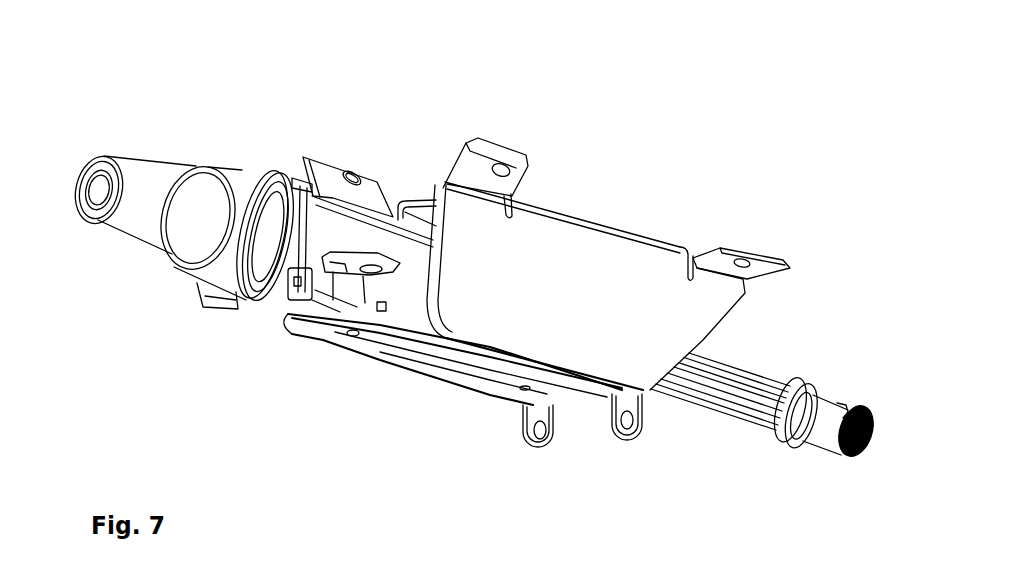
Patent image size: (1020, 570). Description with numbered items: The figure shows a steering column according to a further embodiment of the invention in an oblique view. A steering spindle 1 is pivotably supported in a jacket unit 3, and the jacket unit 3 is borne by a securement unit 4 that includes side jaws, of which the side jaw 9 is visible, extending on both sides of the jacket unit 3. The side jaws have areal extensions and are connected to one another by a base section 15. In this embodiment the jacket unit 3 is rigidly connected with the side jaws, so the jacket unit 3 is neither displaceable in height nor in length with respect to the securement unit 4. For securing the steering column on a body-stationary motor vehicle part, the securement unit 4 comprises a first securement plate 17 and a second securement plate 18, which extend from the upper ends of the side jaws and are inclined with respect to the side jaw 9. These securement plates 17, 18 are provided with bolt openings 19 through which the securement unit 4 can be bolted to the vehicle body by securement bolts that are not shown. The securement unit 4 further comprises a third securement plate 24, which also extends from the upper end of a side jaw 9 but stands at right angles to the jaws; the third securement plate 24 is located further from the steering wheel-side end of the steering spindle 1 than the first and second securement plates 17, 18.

The steering spindle 1 is at (173, 203).
The jacket unit 3 is at (340, 232).
The securement unit 4 is at (610, 317).
The side jaw 9 is at (500, 290).
The base section 15 is at (427, 197).
The first securement plate 17 is at (481, 170).
The second securement plate 18 is at (335, 167).
The bolt opening 19 is at (360, 173).
The third securement plate 24 is at (767, 253).